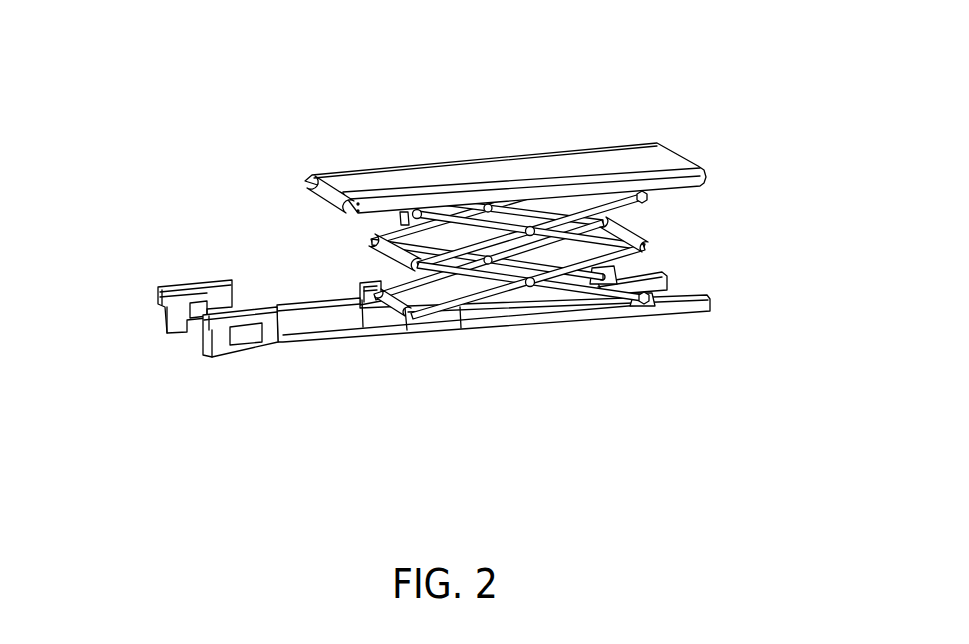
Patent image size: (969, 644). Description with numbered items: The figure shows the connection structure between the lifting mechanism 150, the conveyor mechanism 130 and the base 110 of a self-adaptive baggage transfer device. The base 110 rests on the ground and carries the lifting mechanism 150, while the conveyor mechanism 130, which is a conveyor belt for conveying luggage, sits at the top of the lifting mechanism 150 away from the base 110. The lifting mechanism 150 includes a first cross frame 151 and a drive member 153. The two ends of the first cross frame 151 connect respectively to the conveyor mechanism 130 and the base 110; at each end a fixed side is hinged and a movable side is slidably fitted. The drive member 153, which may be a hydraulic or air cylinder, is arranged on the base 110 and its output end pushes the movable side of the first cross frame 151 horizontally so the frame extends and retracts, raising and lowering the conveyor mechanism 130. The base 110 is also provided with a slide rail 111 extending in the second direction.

The base 110 is at (353, 338).
The slide rail 111 is at (203, 333).
The conveyor mechanism 130 is at (483, 165).
The lifting mechanism 150 is at (520, 312).
The first cross frame 151 is at (372, 238).
The drive member 153 is at (530, 302).